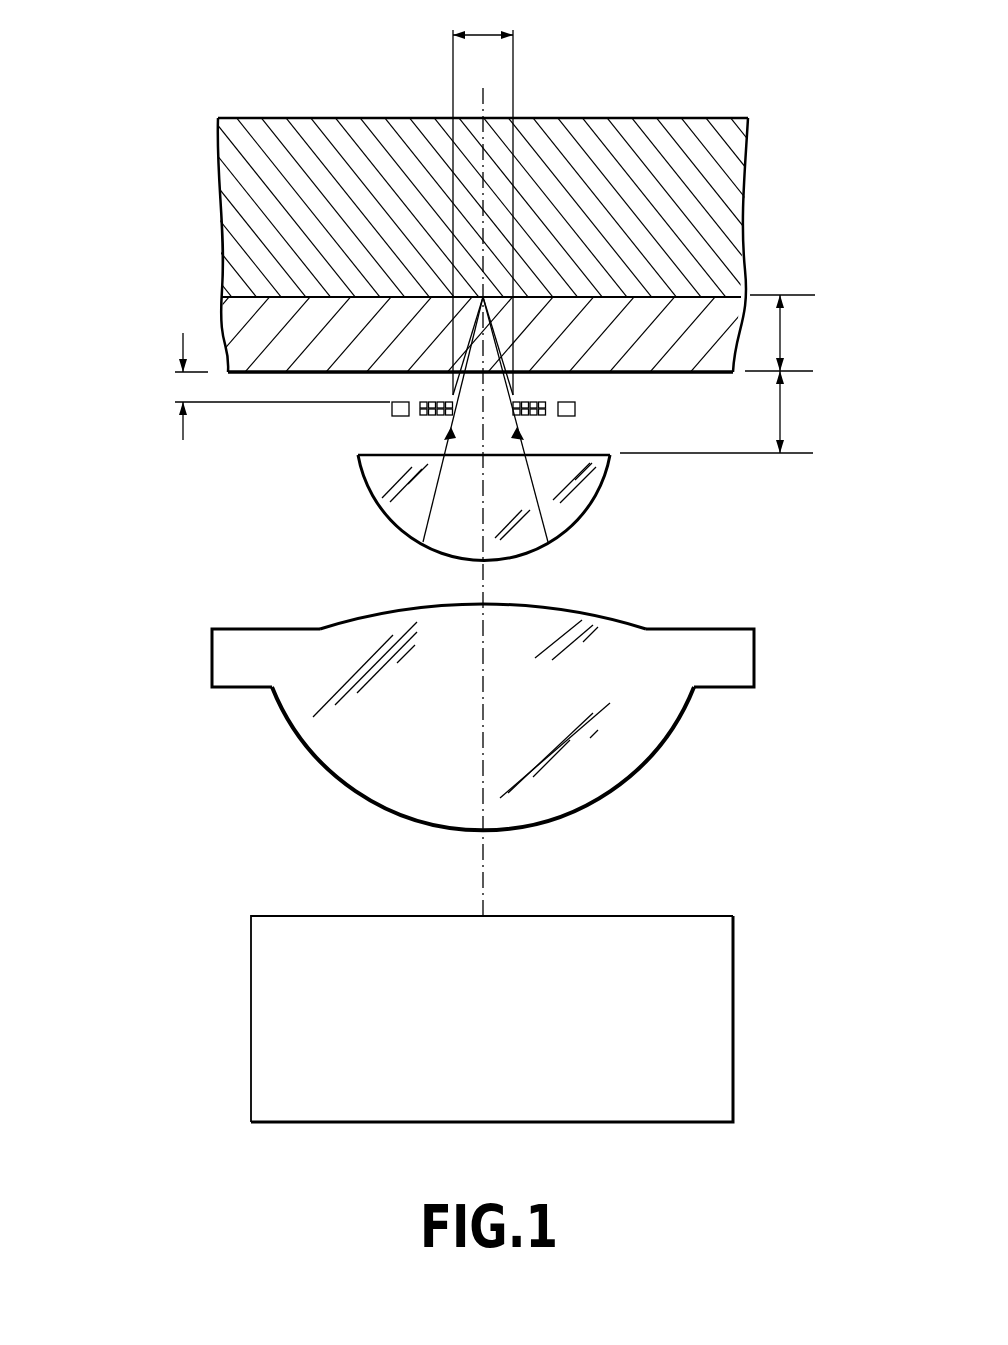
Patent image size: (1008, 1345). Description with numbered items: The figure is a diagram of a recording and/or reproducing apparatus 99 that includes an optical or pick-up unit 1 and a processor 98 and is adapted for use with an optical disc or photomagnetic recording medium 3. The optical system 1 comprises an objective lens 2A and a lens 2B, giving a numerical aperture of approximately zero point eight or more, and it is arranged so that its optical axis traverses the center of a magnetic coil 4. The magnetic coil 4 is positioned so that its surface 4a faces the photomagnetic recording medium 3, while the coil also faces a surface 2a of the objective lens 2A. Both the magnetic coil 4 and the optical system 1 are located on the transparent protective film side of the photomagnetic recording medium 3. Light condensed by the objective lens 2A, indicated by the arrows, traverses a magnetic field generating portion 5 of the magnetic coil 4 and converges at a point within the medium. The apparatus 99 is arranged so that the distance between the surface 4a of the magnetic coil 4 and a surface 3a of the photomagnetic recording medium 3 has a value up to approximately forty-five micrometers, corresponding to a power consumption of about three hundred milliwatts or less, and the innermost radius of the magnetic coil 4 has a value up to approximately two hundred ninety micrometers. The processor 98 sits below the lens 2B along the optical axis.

The optical system 1 is at (178, 564).
The objective lens 2A is at (582, 508).
The lens 2B is at (717, 624).
The surface of the objective lens 2a is at (597, 453).
The photomagnetic recording medium 3 is at (683, 103).
The surface of the photomagnetic recording medium 3a is at (706, 372).
The magnetic coil 4 is at (588, 407).
The surface of the magnetic coil 4a is at (427, 393).
The magnetic field generating portion 5 is at (513, 397).
The processor 98 is at (677, 914).
The recording and/or reproducing apparatus 99 is at (125, 886).